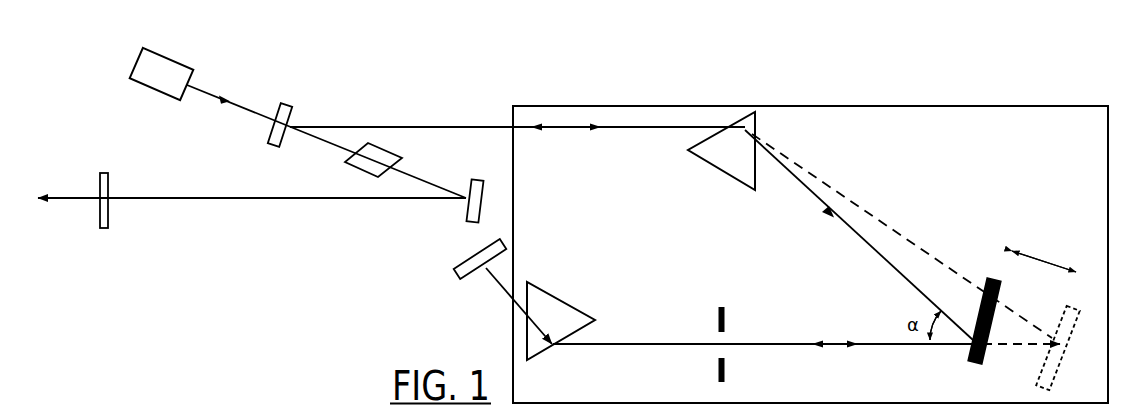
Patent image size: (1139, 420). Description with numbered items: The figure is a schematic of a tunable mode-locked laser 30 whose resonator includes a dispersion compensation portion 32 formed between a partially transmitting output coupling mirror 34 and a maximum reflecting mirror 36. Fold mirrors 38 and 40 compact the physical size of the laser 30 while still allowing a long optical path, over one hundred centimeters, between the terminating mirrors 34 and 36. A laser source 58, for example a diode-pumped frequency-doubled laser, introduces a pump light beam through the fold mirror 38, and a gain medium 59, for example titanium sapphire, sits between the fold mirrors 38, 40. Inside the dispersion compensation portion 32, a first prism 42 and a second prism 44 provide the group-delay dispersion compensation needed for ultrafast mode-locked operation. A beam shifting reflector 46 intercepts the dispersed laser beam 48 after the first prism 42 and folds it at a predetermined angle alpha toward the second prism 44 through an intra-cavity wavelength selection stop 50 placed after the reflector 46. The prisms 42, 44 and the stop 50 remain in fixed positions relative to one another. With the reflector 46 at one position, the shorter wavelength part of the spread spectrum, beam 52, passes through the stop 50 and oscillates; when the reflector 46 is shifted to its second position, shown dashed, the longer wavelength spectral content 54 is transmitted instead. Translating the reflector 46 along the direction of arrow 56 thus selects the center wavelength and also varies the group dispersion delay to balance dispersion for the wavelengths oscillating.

The tunable mode-locked laser 30 is at (749, 62).
The dispersion compensation portion 32 is at (963, 105).
The partially transmitting output coupling mirror 34 is at (109, 212).
The maximum reflecting mirror 36 is at (455, 276).
The fold mirror 38 is at (275, 135).
The fold mirror 40 is at (465, 213).
The first prism 42 is at (721, 168).
The second prism 44 is at (557, 298).
The beam shifting reflector 46 is at (966, 358).
The dispersed laser beam 48 is at (438, 125).
The wavelength selection stop 50 is at (721, 306).
The beam 52 is at (829, 218).
The spectral content 54 is at (889, 217).
The arrow 56 is at (1047, 260).
The laser source 58 is at (154, 91).
The gain medium 59 is at (353, 168).